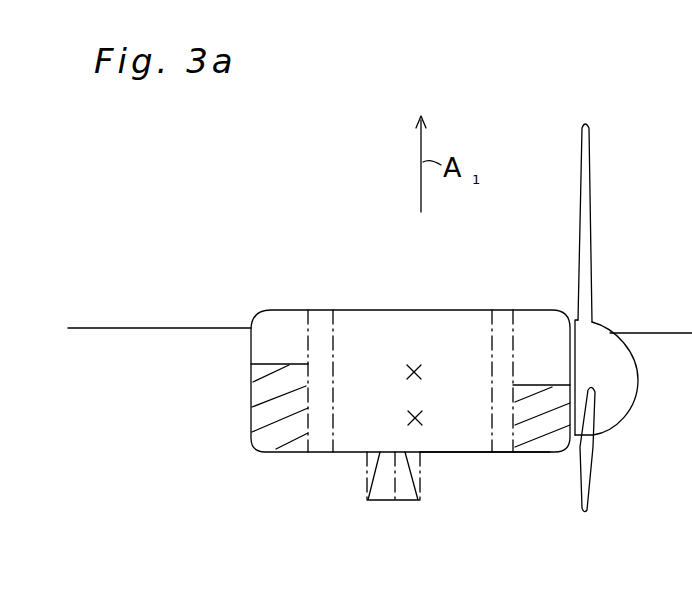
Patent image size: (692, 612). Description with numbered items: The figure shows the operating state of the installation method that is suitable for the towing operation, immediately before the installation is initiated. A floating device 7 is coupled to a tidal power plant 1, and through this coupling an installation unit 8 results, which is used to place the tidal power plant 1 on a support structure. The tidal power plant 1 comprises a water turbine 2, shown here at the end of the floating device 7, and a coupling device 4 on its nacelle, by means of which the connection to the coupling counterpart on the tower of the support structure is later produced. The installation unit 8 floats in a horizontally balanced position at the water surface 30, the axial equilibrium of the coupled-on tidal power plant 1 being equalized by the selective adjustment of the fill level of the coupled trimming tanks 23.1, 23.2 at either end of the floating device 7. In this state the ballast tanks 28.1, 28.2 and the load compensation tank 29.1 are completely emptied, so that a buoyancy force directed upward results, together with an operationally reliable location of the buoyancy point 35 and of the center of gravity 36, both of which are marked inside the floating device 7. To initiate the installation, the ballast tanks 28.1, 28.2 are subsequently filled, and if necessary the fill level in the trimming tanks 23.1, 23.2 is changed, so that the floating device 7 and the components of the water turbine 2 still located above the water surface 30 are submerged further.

The tidal power plant 1 is at (620, 387).
The water turbine 2 is at (607, 340).
The coupling device 4 is at (378, 503).
The floating device 7 is at (480, 453).
The installation unit 8 is at (295, 517).
The trimming tank 23.1 is at (276, 353).
The trimming tank 23.2 is at (528, 347).
The ballast tank 28.1 is at (320, 338).
The ballast tank 28.2 is at (497, 328).
The load compensation tank 29.1 is at (402, 352).
The water surface 30 is at (92, 326).
The buoyancy point 35 is at (421, 372).
The center of gravity 36 is at (422, 418).